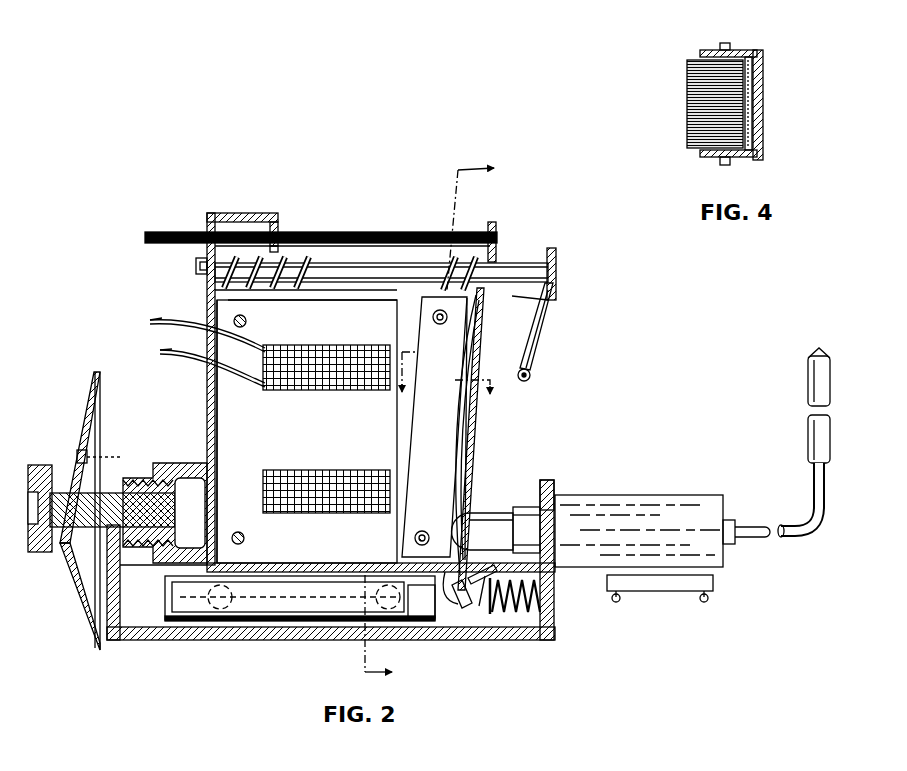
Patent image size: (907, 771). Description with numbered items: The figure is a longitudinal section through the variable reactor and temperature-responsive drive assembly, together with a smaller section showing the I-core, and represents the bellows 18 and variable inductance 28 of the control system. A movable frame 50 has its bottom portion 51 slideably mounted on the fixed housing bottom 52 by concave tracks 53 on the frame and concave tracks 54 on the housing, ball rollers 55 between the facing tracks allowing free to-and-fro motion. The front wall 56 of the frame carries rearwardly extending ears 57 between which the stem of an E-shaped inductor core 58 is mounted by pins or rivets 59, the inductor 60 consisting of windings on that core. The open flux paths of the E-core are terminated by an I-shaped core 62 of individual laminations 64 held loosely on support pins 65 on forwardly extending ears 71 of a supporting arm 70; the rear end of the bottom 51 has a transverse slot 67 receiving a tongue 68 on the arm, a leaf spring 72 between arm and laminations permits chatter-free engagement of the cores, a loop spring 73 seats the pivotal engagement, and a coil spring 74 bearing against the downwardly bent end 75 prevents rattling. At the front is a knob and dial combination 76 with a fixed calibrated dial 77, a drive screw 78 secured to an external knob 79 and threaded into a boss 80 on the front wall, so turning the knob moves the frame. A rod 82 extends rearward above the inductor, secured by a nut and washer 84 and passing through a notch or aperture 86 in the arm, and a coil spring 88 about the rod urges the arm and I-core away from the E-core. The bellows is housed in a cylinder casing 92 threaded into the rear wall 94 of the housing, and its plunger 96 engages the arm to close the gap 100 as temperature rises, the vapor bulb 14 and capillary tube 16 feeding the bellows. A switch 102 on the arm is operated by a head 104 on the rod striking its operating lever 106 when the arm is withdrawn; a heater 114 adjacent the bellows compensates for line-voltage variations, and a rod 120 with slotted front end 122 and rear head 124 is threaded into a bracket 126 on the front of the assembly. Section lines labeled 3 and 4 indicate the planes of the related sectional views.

In FIG. 2, the vapor bulb 14 is at (831, 370).
In FIG. 2, the capillary tube 16 is at (802, 536).
In FIG. 2, the bellows 18 is at (622, 490).
In FIG. 2, the variable inductance 28 is at (556, 381).
In FIG. 2, the movable frame 50 is at (205, 312).
In FIG. 2, the bottom portion of movable frame 51 is at (302, 565).
In FIG. 2, the fixed housing bottom 52 is at (252, 640).
In FIG. 2, the concave tracks 53 is at (422, 618).
In FIG. 2, the concave tracks 54 is at (172, 594).
In FIG. 2, the ball rollers 55 is at (290, 597).
In FIG. 2, the front wall 56 is at (207, 388).
In FIG. 2, the ears 57 is at (250, 300).
In FIG. 2, the E-shaped inductor core 58 is at (347, 320).
In FIG. 2, the pins or rivets 59 is at (247, 321).
In FIG. 2, the inductor 60 is at (304, 294).
In FIG. 2, the I-shaped core 62 is at (441, 440).
In FIG. 2, the laminations 64 is at (449, 333).
In FIG. 4, the laminations 64 is at (688, 92).
In FIG. 2, the support pins 65 is at (439, 323).
In FIG. 4, the support pins 65 is at (731, 45).
In FIG. 2, the transverse slot 67 is at (482, 565).
In FIG. 2, the tongue 68 is at (455, 598).
In FIG. 2, the supporting arm 70 is at (473, 458).
In FIG. 4, the supporting arm 70 is at (764, 108).
In FIG. 2, the ears 71 is at (465, 422).
In FIG. 4, the ears 71 is at (705, 50).
In FIG. 2, the leaf spring 72 is at (461, 500).
In FIG. 4, the leaf spring 72 is at (753, 85).
In FIG. 2, the loop spring 73 is at (480, 604).
In FIG. 2, the coil spring 74 is at (552, 620).
In FIG. 2, the downwardly bent end 75 is at (498, 586).
In FIG. 2, the knob and dial combination 76 is at (80, 408).
In FIG. 2, the calibrated dial 77 is at (88, 612).
In FIG. 2, the drive screw 78 is at (150, 528).
In FIG. 2, the knob 79 is at (34, 465).
In FIG. 2, the boss 80 is at (178, 465).
In FIG. 2, the rod 82 is at (367, 265).
In FIG. 2, the nut and washer 84 is at (200, 263).
In FIG. 2, the notch or aperture 86 is at (484, 283).
In FIG. 2, the coil spring 88 is at (280, 262).
In FIG. 2, the cylinder casing 92 is at (641, 497).
In FIG. 2, the rear wall 94 is at (554, 490).
In FIG. 2, the plunger 96 is at (500, 513).
In FIG. 2, the gap 100 is at (412, 322).
In FIG. 2, the switch 102 is at (531, 335).
In FIG. 2, the head 104 is at (556, 262).
In FIG. 2, the operating lever 106 is at (541, 312).
In FIG. 2, the heater 114 is at (695, 593).
In FIG. 2, the rod 120 is at (337, 236).
In FIG. 2, the slotted front end 122 is at (148, 232).
In FIG. 2, the head 124 is at (496, 238).
In FIG. 2, the bracket 126 is at (222, 213).
In FIG. 2, the section line 3- 3 is at (438, 421).
In FIG. 2, the section line 4- 4 is at (446, 384).